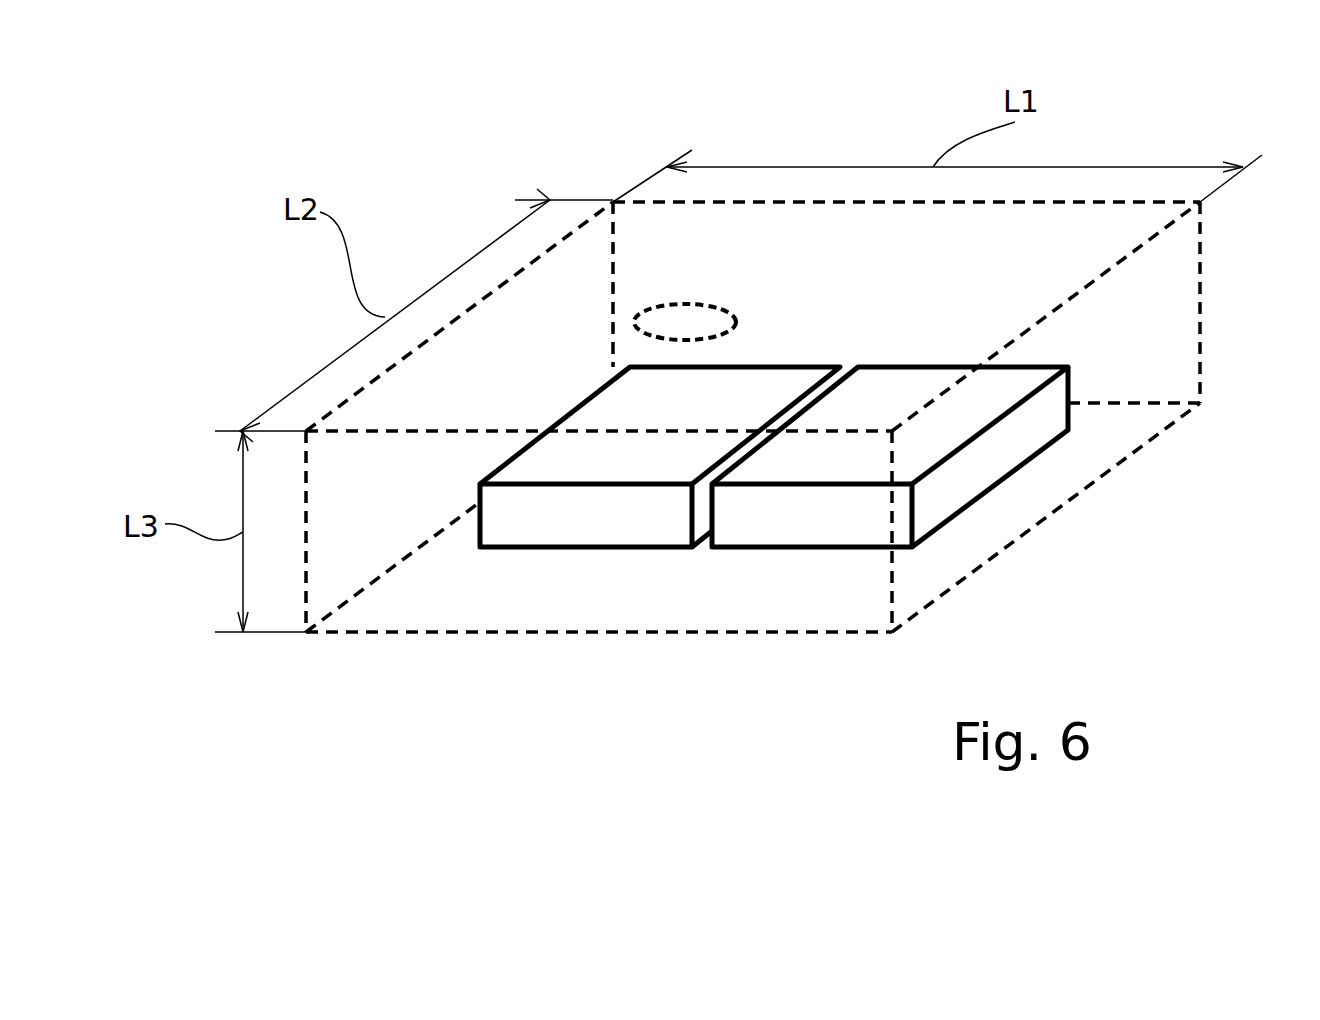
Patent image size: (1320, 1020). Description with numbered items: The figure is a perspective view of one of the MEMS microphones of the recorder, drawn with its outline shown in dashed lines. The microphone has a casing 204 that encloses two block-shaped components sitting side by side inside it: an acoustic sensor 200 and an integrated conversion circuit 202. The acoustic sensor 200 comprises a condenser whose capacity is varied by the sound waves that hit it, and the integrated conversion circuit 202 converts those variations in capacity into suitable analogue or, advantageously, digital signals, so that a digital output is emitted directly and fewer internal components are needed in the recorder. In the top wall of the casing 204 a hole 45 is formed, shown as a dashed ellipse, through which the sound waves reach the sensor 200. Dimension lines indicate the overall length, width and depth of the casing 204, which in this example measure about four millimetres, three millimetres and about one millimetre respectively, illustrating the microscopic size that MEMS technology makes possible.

The casing 204 is at (533, 260).
The hole 45 is at (693, 305).
The integrated conversion circuit 202 is at (590, 522).
The acoustic sensor 200 is at (815, 520).